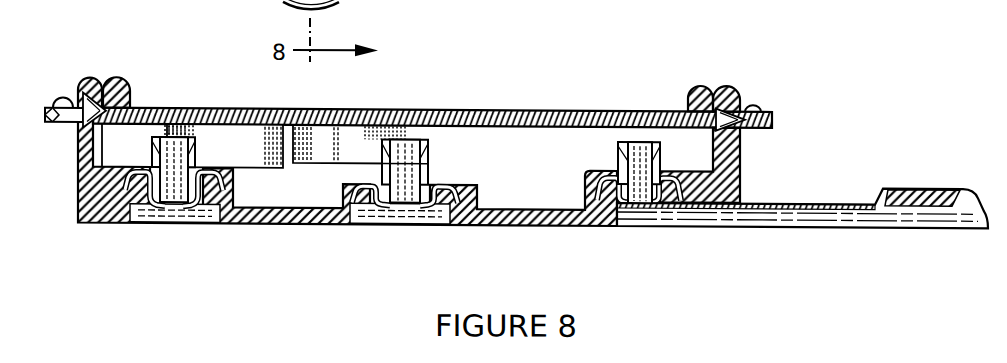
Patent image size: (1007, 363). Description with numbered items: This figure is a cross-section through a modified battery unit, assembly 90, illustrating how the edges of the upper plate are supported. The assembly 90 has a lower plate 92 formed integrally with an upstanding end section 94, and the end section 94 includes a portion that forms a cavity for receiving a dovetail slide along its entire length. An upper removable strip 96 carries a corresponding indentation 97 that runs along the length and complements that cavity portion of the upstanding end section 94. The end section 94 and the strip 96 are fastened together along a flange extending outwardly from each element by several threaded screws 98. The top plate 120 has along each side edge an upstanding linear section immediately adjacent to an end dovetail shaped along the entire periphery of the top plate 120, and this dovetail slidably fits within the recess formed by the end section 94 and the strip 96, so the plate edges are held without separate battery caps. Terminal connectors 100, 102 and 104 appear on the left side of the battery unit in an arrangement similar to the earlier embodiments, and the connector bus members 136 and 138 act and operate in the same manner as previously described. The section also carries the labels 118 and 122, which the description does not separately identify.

The assembly 90 is at (456, 95).
The lower plate 92 is at (515, 221).
The upstanding end section 94 is at (78, 195).
The upper removable strip 96 is at (715, 86).
The indentation 97 is at (720, 123).
The threaded screws 98 is at (752, 102).
The terminal connector 100 is at (195, 156).
The terminal connector 102 is at (428, 158).
The terminal connector 104 is at (618, 157).
The mounting flange 118 is at (817, 195).
The top plate 120 is at (200, 106).
The bushing 122 is at (113, 79).
The connector bus member 136 is at (252, 166).
The connector bus member 138 is at (315, 162).